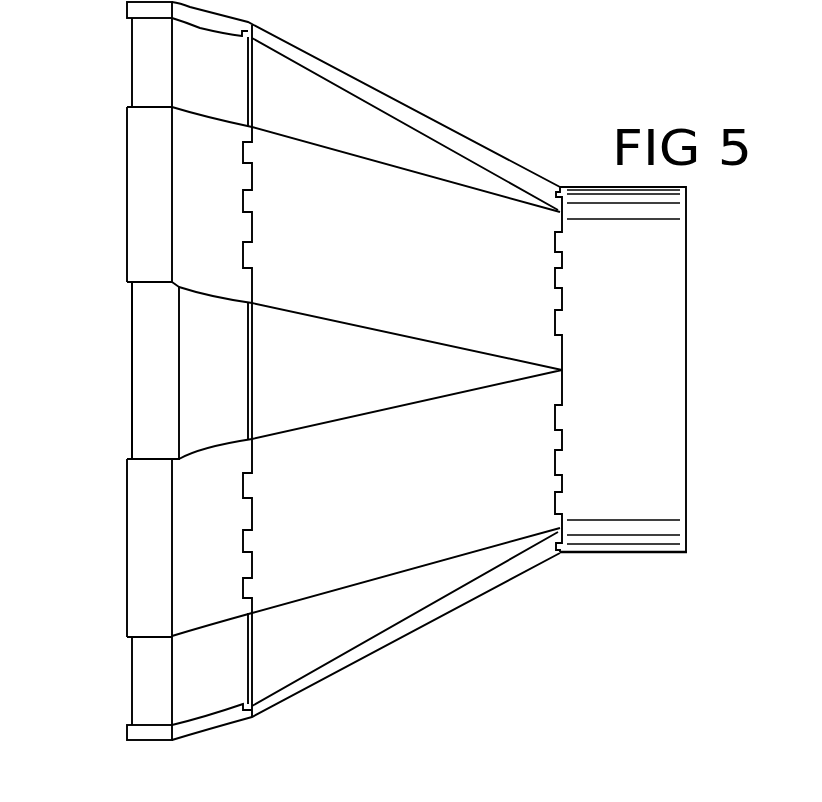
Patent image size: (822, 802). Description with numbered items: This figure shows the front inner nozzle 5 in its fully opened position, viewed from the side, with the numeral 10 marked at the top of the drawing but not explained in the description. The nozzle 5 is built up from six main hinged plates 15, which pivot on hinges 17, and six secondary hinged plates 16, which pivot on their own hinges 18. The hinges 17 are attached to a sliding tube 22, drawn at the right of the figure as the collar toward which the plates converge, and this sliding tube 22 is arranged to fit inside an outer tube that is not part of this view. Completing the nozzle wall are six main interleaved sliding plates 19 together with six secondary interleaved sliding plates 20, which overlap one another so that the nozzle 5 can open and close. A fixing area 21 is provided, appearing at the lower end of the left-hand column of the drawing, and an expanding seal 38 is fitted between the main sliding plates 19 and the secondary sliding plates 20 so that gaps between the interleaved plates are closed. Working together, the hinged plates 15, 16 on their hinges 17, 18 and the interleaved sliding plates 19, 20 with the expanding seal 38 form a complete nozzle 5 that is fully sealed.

The nozzle 5 is at (126, 152).
The seal assembly 10 is at (366, 93).
The main hinged plate 15 is at (447, 483).
The secondary hinged plate 16 is at (193, 563).
The hinge 17 is at (562, 310).
The hinge 18 is at (243, 487).
The main interleaved sliding plate 19 is at (290, 370).
The secondary interleaved sliding plate 20 is at (152, 362).
The fixing area 21 is at (140, 728).
The sliding tube 22 is at (635, 527).
The expanding seal 38 is at (252, 663).